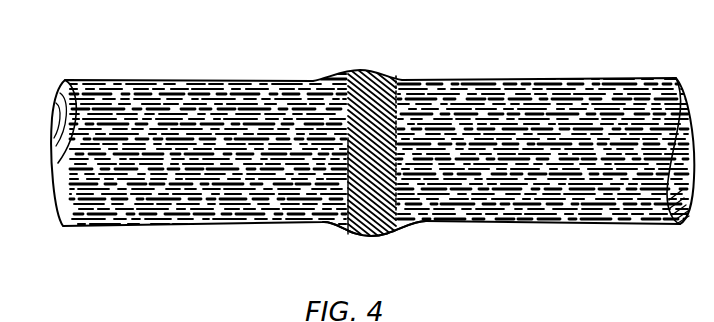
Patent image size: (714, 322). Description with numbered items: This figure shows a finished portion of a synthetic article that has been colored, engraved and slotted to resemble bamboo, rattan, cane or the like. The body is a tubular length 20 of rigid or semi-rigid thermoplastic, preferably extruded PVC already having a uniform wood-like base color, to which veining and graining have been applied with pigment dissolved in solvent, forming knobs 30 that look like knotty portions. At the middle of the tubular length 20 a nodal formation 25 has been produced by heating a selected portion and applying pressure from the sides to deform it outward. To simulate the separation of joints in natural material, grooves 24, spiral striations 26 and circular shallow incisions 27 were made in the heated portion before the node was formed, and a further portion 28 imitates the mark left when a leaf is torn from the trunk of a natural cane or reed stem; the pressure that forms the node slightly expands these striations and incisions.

The tubular length 20 is at (577, 117).
The knobs 30 is at (133, 148).
The nodal formation 25 is at (366, 62).
The spiral striations 26 is at (362, 192).
The circular shallow incisions 27 is at (387, 108).
The leaf-tear portion 28 is at (414, 141).
The grooves 24 is at (317, 203).